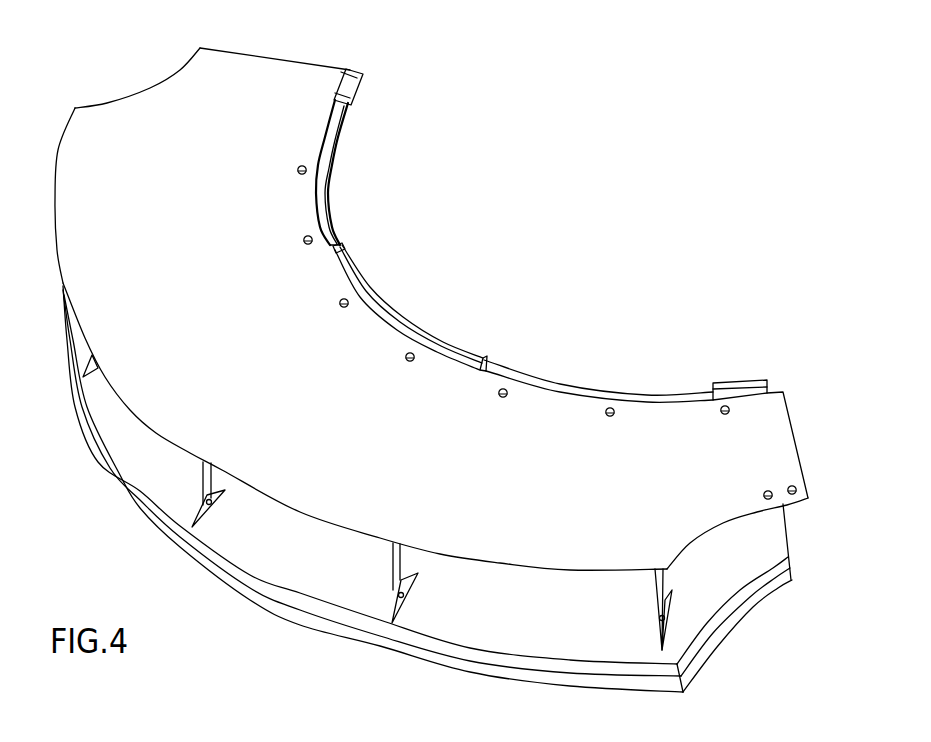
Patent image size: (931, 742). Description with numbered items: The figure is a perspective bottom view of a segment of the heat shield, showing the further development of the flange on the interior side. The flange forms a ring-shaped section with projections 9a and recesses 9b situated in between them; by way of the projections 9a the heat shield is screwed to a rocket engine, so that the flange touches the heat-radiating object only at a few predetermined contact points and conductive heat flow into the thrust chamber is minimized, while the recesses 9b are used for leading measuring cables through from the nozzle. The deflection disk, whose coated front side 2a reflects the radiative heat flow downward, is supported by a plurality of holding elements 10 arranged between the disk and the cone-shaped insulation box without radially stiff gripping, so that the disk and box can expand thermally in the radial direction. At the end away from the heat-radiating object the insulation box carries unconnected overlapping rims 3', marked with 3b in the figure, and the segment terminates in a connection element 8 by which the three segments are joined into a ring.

The front side of the deflection disk 2a is at (535, 417).
The upper rail of the base profile 3b is at (258, 552).
The overlapping rims 3' is at (428, 493).
The connection element 8 is at (773, 443).
The projections 9a is at (357, 66).
The recesses 9b is at (332, 201).
The holding elements 10 is at (203, 486).